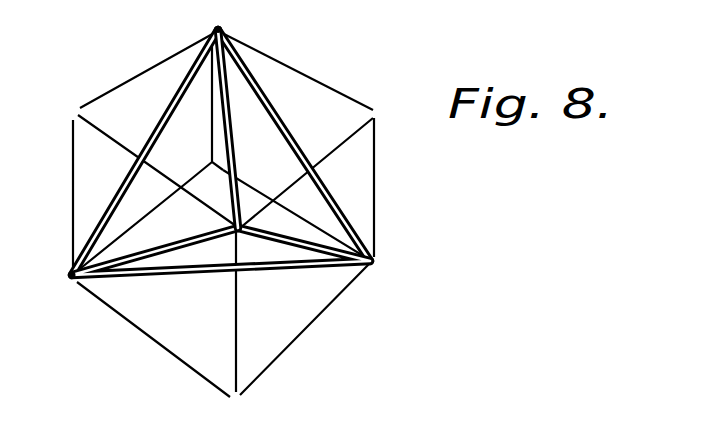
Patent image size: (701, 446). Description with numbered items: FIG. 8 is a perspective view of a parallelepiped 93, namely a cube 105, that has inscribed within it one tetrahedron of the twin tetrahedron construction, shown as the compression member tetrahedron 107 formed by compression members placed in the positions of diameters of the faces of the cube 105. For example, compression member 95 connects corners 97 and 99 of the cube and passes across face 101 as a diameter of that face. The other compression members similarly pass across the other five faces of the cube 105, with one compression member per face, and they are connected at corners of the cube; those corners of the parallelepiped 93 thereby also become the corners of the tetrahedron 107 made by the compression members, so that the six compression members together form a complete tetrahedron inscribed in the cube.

The parallelepiped 93 is at (355, 100).
The compression member 95 is at (338, 208).
The corner 97 is at (219, 27).
The corner 99 is at (375, 265).
The face 101 is at (332, 130).
The cube 105 is at (315, 69).
The compression member tetrahedron 107 is at (170, 86).